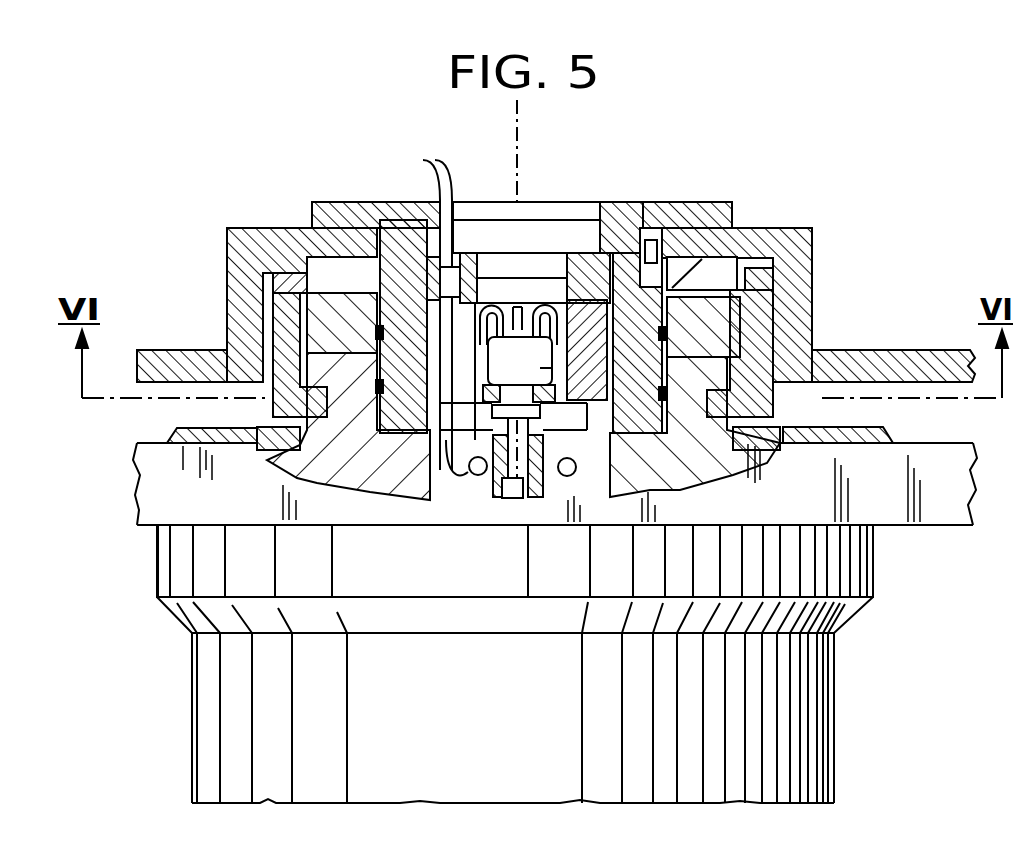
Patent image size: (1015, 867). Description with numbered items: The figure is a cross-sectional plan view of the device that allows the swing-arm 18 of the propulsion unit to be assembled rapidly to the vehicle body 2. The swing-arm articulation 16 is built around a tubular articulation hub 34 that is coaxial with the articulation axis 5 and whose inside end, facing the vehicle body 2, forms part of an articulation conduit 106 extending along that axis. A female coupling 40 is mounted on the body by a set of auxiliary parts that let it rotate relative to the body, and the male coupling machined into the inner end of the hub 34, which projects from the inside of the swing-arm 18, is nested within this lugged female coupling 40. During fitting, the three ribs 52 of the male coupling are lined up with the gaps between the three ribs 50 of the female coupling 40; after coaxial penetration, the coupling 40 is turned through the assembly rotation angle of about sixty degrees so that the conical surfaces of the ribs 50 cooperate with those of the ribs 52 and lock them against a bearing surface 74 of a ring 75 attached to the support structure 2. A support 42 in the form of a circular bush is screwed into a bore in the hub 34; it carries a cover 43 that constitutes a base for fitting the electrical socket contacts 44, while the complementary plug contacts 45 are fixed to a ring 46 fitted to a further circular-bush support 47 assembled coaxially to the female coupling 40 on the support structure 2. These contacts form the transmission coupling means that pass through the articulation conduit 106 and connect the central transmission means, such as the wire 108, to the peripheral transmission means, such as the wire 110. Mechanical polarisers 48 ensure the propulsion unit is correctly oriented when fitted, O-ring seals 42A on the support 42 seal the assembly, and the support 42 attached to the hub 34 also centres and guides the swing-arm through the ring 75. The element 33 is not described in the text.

The vehicle body 2 is at (866, 380).
The articulation axis 5 is at (520, 177).
The swing-arm articulation 16 is at (181, 691).
The swing-arm 18 is at (177, 467).
The valve body 33 is at (575, 400).
The articulation hub 34 is at (267, 460).
The female coupling 40 is at (268, 308).
The support 42 is at (388, 258).
The O-ring seals 42A is at (655, 335).
The cover 43 is at (489, 302).
The socket contacts 44 is at (428, 440).
The plug contacts 45 is at (447, 270).
The ring 46 is at (478, 300).
The support 47 is at (648, 238).
The mechanical polarisers 48 is at (660, 262).
The ribs 50 is at (272, 412).
The ribs 52 is at (208, 358).
The bearing surface 74 is at (375, 400).
The ring 75 is at (330, 312).
The articulation conduit 106 is at (591, 200).
The wire 108 is at (445, 181).
The wire 110 is at (470, 468).